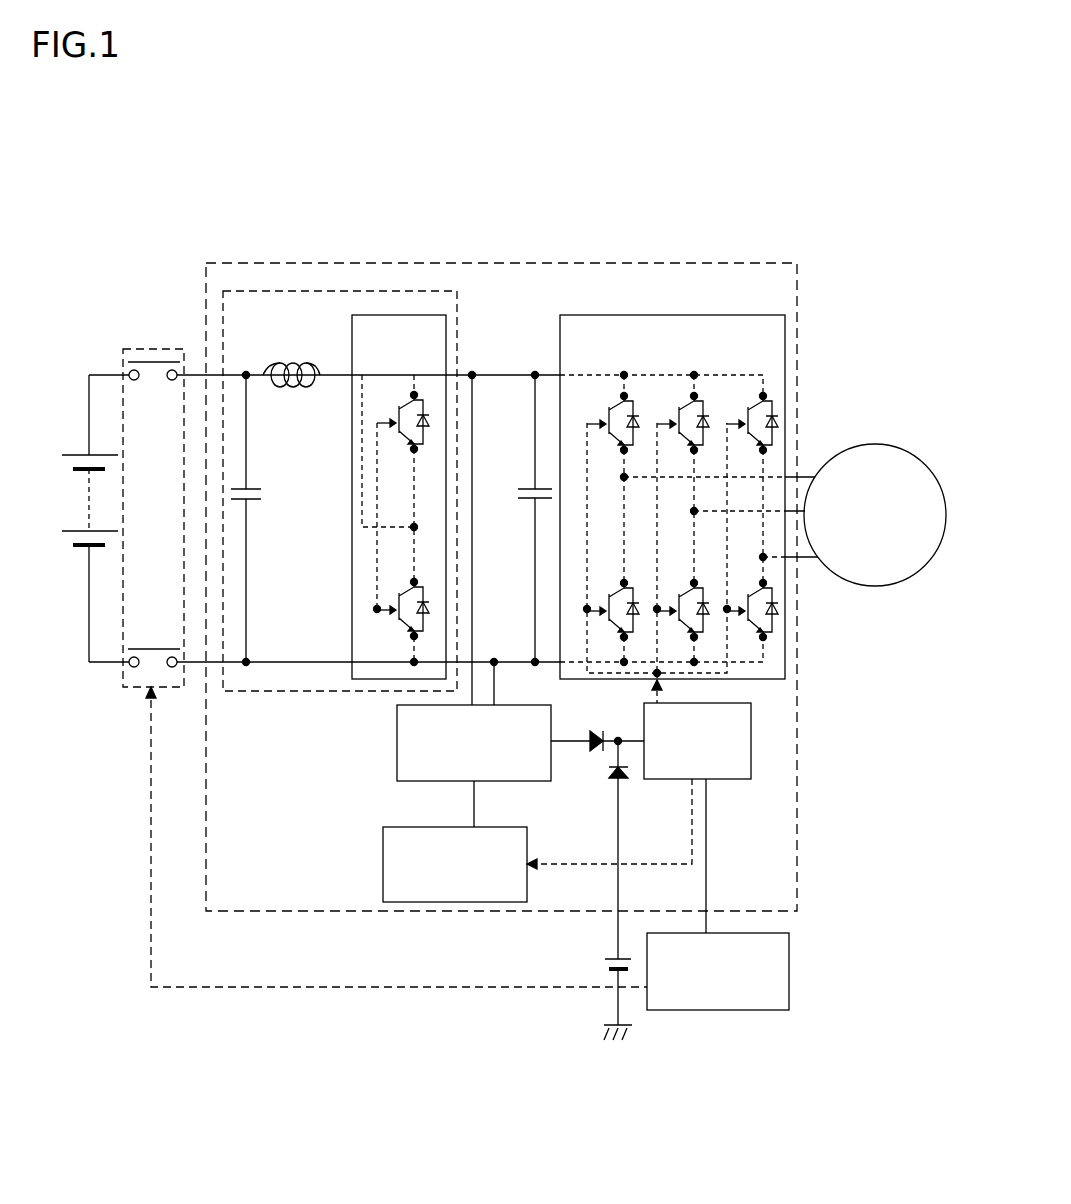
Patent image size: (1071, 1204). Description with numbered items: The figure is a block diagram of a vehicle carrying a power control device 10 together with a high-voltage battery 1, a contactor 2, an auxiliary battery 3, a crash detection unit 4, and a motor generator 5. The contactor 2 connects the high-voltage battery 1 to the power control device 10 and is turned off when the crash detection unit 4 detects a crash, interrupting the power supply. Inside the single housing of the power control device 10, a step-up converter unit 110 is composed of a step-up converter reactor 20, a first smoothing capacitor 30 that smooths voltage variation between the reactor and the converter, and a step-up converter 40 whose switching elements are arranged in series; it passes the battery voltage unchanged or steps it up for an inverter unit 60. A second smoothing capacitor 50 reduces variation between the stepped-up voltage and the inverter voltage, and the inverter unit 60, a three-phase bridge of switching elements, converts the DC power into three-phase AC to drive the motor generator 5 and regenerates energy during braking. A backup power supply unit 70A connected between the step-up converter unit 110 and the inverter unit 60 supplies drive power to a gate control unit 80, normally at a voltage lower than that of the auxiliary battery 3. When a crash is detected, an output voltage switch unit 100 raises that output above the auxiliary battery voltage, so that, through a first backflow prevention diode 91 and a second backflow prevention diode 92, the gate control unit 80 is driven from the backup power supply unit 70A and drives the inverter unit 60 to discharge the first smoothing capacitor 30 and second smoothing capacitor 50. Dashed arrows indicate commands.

The high-voltage battery 1 is at (78, 445).
The contactor 2 is at (152, 345).
The auxiliary battery 3 is at (606, 956).
The crash detection unit 4 is at (789, 971).
The motor generator 5 is at (873, 445).
The power control device 10 is at (609, 262).
The step-up converter reactor 20 is at (289, 352).
The first smoothing capacitor 30 is at (262, 490).
The step-up converter 40 is at (350, 340).
The second smoothing capacitor 50 is at (521, 488).
The inverter unit 60 is at (693, 315).
The backup power supply unit 70A is at (397, 735).
The gate control unit 80 is at (751, 741).
The first backflow prevention diode 91 is at (592, 730).
The second backflow prevention diode 92 is at (603, 778).
The output voltage switch unit 100 is at (383, 860).
The step-up converter unit 110 is at (462, 315).